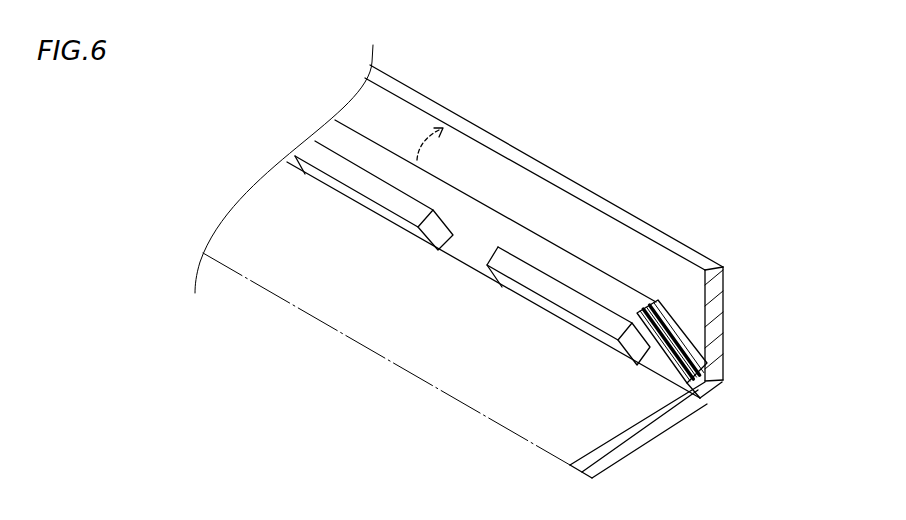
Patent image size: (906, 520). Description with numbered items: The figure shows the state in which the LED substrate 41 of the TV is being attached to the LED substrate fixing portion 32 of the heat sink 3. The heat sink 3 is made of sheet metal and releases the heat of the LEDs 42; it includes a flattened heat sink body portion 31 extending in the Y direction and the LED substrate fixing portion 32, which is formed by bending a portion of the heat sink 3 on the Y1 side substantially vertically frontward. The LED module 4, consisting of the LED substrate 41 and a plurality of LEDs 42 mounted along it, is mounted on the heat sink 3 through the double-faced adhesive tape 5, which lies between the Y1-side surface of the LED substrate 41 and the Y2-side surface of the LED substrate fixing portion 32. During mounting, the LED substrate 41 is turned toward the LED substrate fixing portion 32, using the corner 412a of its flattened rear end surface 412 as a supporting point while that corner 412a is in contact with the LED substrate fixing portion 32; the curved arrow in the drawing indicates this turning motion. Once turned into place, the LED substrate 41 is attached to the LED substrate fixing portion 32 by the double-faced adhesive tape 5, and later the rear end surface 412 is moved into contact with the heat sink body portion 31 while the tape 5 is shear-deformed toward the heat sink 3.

The heat sink 3 is at (417, 366).
The heat sink body portion 31 is at (604, 410).
The LED substrate fixing portion 32 is at (563, 183).
The LED module 4 is at (543, 280).
The LED substrate 41 is at (440, 187).
The rear end surface 412 is at (702, 393).
The corner 412a is at (714, 384).
The LED 42 is at (360, 204).
The double-faced adhesive tape 5 is at (672, 326).